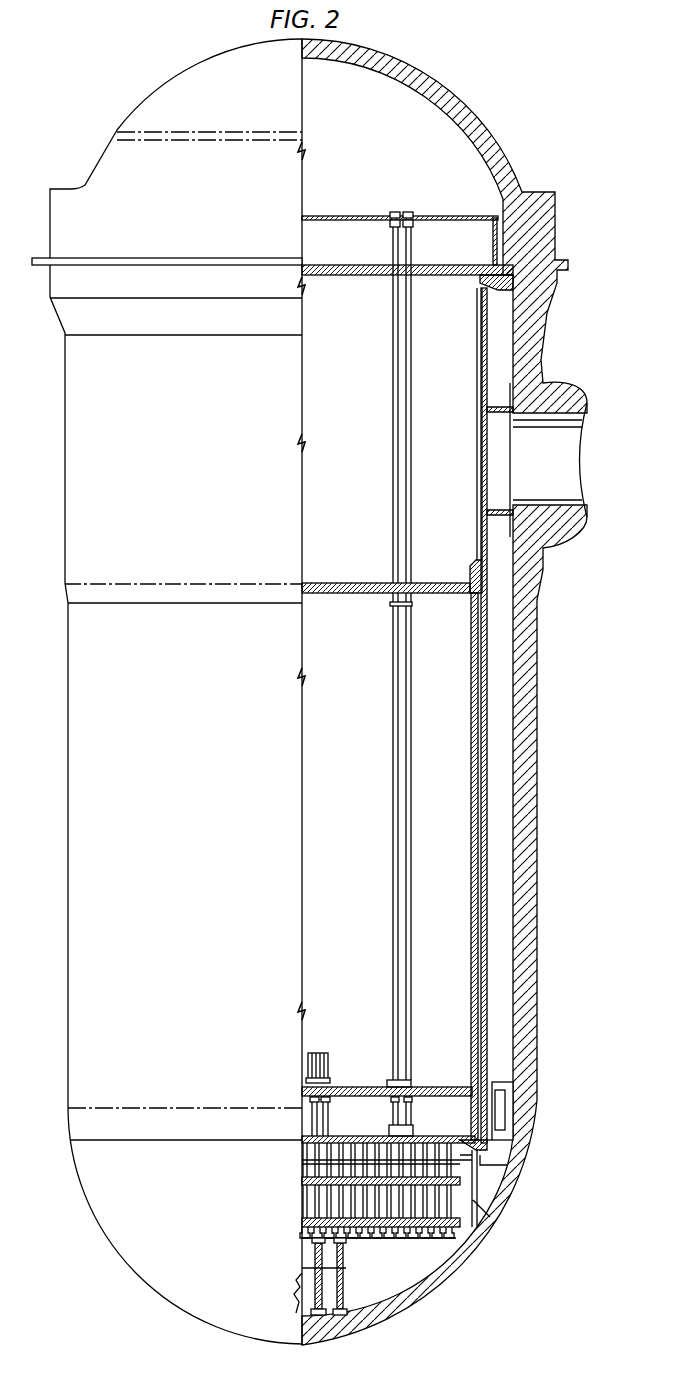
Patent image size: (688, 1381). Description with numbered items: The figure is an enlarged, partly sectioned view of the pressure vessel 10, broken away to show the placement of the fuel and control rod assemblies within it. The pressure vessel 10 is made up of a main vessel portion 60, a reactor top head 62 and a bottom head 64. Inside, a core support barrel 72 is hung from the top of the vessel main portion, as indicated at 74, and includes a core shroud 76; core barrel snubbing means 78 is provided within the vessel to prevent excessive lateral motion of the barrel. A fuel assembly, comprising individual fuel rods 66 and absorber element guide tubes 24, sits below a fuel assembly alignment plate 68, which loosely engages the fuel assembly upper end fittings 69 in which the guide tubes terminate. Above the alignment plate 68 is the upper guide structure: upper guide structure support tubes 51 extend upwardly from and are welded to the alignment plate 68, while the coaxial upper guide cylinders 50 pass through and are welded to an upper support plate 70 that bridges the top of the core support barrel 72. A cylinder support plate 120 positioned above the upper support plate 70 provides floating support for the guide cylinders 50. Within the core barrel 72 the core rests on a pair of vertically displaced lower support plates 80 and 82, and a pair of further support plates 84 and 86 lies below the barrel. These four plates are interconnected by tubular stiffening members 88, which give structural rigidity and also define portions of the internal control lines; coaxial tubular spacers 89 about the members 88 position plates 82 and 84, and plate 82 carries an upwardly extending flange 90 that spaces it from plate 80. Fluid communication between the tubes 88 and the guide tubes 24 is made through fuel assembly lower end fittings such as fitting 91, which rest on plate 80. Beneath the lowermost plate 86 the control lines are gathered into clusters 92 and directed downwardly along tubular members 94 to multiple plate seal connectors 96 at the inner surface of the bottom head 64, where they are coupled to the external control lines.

The pressure vessel 10 is at (550, 662).
The absorber element guide tubes 24 is at (404, 836).
The upper guide cylinder 50 is at (413, 240).
The upper guide structure support tubes 51 is at (404, 372).
The main vessel portion 60 is at (538, 735).
The reactor top head 62 is at (441, 81).
The bottom head 64 is at (92, 1215).
The fuel rods 66 is at (340, 1042).
The fuel assembly alignment plate 68 is at (362, 583).
The fuel assembly upper end fittings 69 is at (413, 603).
The upper support plate 70 is at (322, 264).
The core support barrel 72 is at (490, 584).
The core support barrel hanging point 74 is at (510, 289).
The core shroud 76 is at (472, 750).
The core barrel snubbing means 78 is at (508, 1082).
The lower support plate 80 is at (367, 1087).
The lower support plate 82 is at (371, 1117).
The support plate 84 is at (297, 1180).
The support plate 86 is at (297, 1220).
The tubular stiffening members 88 is at (409, 1110).
The coaxial tubular spacers 89 is at (297, 1158).
The upwardly extending flange 90 is at (470, 1115).
The fuel assembly lower end fitting 91 is at (416, 1080).
The control line clusters 92 is at (345, 1255).
The tubular members 94 is at (316, 1264).
The multiple plate seal connectors 96 is at (353, 1308).
The cylinder support plate 120 is at (361, 216).